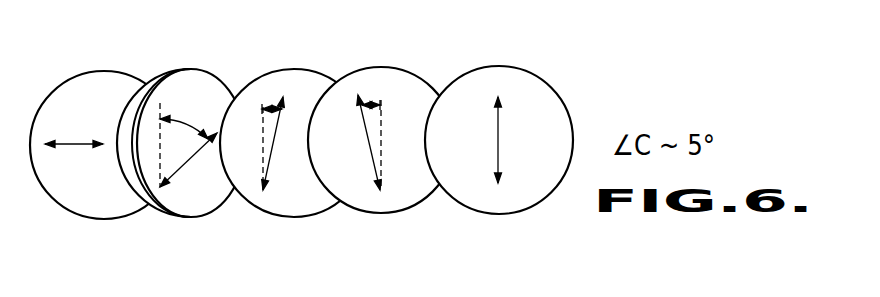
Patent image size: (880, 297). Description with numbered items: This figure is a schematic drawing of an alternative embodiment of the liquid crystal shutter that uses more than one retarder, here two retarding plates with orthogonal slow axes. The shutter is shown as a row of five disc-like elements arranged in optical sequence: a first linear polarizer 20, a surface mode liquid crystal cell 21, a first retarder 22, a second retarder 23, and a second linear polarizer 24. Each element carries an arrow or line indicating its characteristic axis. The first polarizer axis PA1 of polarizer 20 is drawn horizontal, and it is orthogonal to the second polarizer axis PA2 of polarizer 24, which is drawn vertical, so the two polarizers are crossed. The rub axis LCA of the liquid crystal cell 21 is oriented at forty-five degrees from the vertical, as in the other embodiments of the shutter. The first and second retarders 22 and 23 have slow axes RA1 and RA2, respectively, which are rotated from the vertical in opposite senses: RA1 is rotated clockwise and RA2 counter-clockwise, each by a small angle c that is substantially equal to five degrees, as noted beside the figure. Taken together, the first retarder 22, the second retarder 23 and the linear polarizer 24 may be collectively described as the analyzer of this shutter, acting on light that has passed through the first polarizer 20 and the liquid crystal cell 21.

The first linear polarizer 20 is at (103, 70).
The surface mode liquid crystal cell 21 is at (200, 70).
The first retarder 22 is at (297, 68).
The second retarder 23 is at (397, 68).
The linear polarizer 24 is at (515, 67).
The first polarizer axis PA1 is at (73, 146).
The rub axis LCA is at (190, 167).
The slow axis of first retarder RA1 is at (275, 157).
The slow axis of second retarder RA2 is at (372, 167).
The second polarizer axis PA2 is at (500, 143).